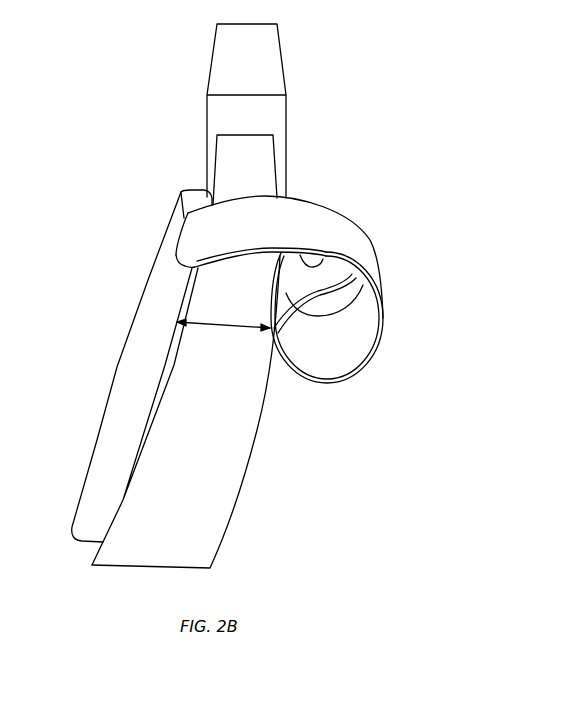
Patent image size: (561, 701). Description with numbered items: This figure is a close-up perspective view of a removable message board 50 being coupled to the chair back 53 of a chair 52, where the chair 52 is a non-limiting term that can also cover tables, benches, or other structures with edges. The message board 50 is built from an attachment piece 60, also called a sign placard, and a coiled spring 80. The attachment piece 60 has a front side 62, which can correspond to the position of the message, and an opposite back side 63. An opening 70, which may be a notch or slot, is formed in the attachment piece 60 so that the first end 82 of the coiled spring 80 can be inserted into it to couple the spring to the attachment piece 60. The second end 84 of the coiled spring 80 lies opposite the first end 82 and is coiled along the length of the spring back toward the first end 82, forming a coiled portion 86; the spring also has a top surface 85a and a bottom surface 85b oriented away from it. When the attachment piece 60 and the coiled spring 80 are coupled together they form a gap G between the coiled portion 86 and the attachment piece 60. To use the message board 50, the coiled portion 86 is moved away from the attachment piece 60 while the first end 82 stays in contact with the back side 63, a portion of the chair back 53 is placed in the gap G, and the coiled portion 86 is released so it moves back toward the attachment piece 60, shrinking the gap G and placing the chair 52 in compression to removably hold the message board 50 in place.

The message board 50 is at (353, 170).
The chair 52 is at (275, 483).
The chair back 53 is at (210, 412).
The attachment piece 60 is at (123, 367).
The front side 62 is at (117, 370).
The back side 63 is at (160, 387).
The opening 70 is at (177, 245).
The coiled spring 80 is at (231, 253).
The first end 82 is at (190, 233).
The second end 84 is at (318, 277).
The top surface 85a is at (287, 293).
The bottom surface 85b is at (323, 260).
The coiled portion 86 is at (349, 312).
The gap G is at (215, 326).